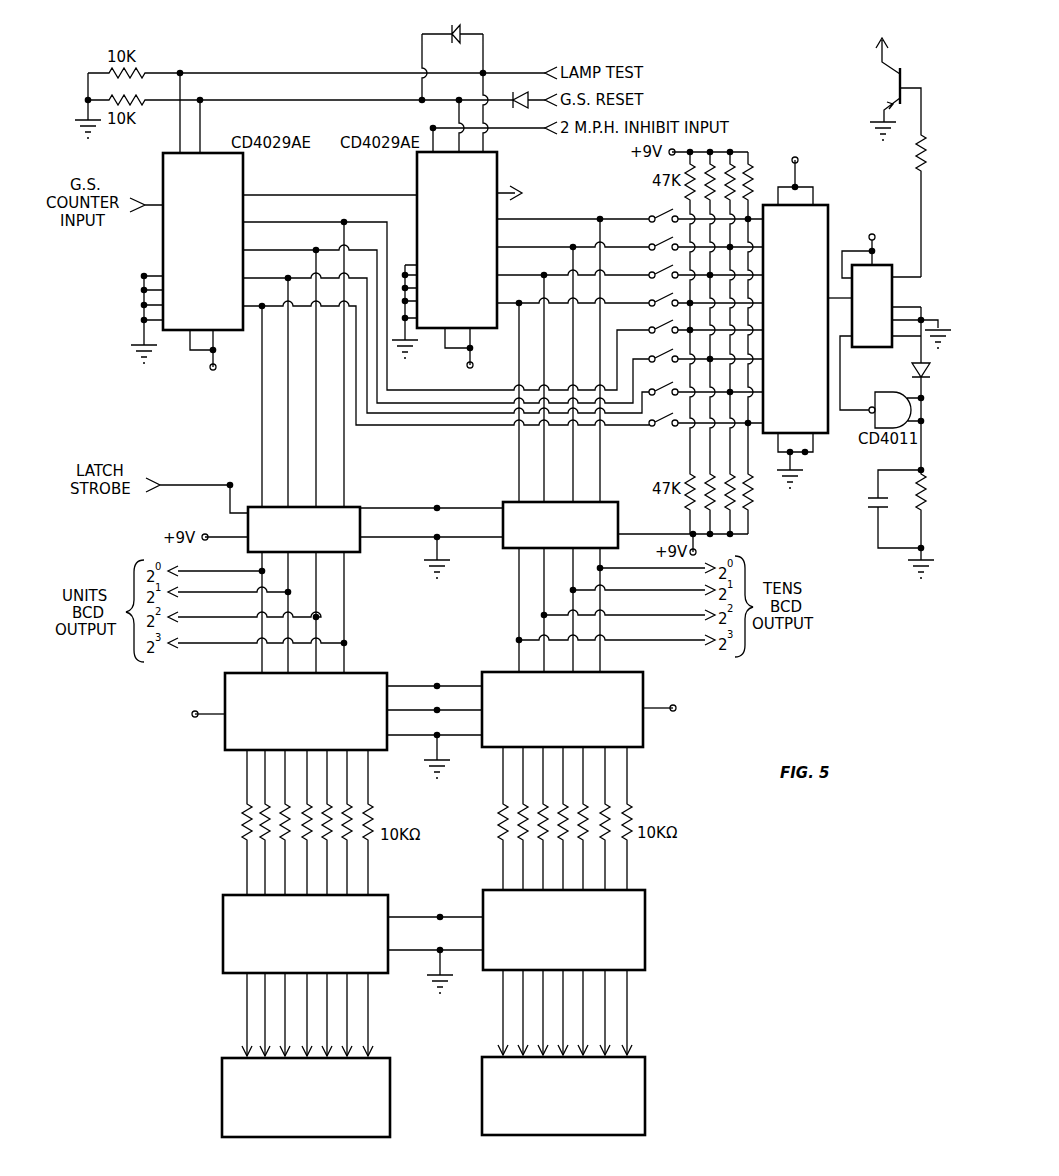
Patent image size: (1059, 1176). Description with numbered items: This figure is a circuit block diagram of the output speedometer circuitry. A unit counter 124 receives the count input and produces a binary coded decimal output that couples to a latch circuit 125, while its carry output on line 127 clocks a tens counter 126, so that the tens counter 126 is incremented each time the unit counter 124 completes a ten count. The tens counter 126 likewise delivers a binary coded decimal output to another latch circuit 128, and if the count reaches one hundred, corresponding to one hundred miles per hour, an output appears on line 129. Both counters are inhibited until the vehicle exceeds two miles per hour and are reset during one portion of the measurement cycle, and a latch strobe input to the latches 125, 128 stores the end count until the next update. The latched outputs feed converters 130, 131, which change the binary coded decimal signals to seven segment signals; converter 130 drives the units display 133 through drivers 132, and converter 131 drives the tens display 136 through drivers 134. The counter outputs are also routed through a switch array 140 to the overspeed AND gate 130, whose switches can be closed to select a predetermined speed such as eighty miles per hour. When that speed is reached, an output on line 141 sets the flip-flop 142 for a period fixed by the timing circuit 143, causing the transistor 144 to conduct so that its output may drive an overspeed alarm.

The unit counter 124 is at (216, 278).
The latch circuit 125 is at (321, 547).
The tens counter 126 is at (469, 276).
The carry output line 127 is at (272, 195).
The latch circuit 128 is at (577, 545).
The output line 129 is at (513, 190).
The overspeed AND gate / converter 130 is at (809, 311).
The converter 131 is at (576, 730).
The drivers 132 is at (321, 951).
The units display 133 is at (321, 1114).
The drivers 134 is at (581, 945).
The tens display 136 is at (577, 1112).
The switch array 140 is at (655, 434).
The output line 141 is at (836, 294).
The flip-flop 142 is at (888, 311).
The timing circuit 143 is at (878, 560).
The transistor 144 is at (905, 64).